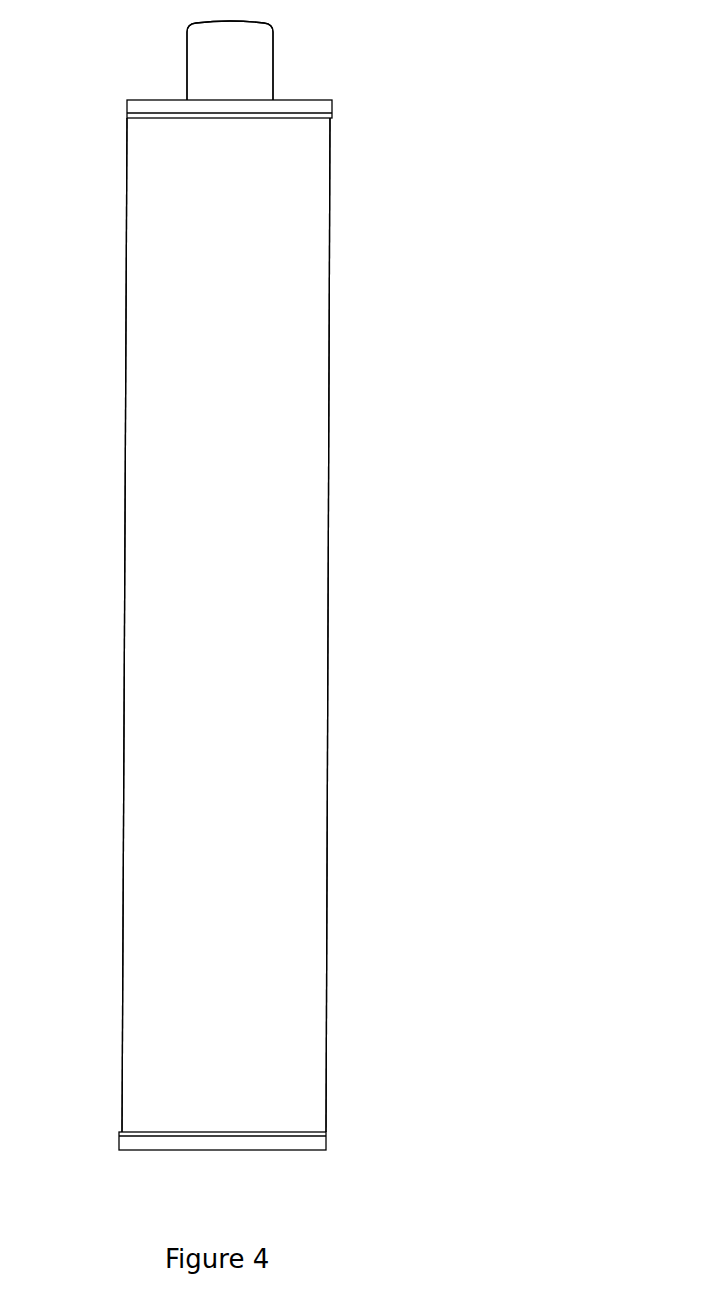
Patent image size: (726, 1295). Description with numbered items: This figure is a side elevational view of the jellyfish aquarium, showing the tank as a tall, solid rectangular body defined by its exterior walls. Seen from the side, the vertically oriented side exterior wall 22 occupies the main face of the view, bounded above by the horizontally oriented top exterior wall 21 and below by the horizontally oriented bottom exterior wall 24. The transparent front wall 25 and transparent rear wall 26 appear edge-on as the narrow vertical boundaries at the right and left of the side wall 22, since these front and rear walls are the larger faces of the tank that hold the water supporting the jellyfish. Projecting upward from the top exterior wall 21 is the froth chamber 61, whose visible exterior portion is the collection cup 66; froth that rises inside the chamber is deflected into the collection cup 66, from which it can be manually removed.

The froth chamber 61 is at (135, 48).
The collection cup 66 is at (262, 70).
The top exterior wall 21 is at (325, 107).
The side exterior wall 22 is at (246, 250).
The front wall 25 is at (332, 440).
The rear wall 26 is at (128, 493).
The bottom exterior wall 24 is at (313, 1143).